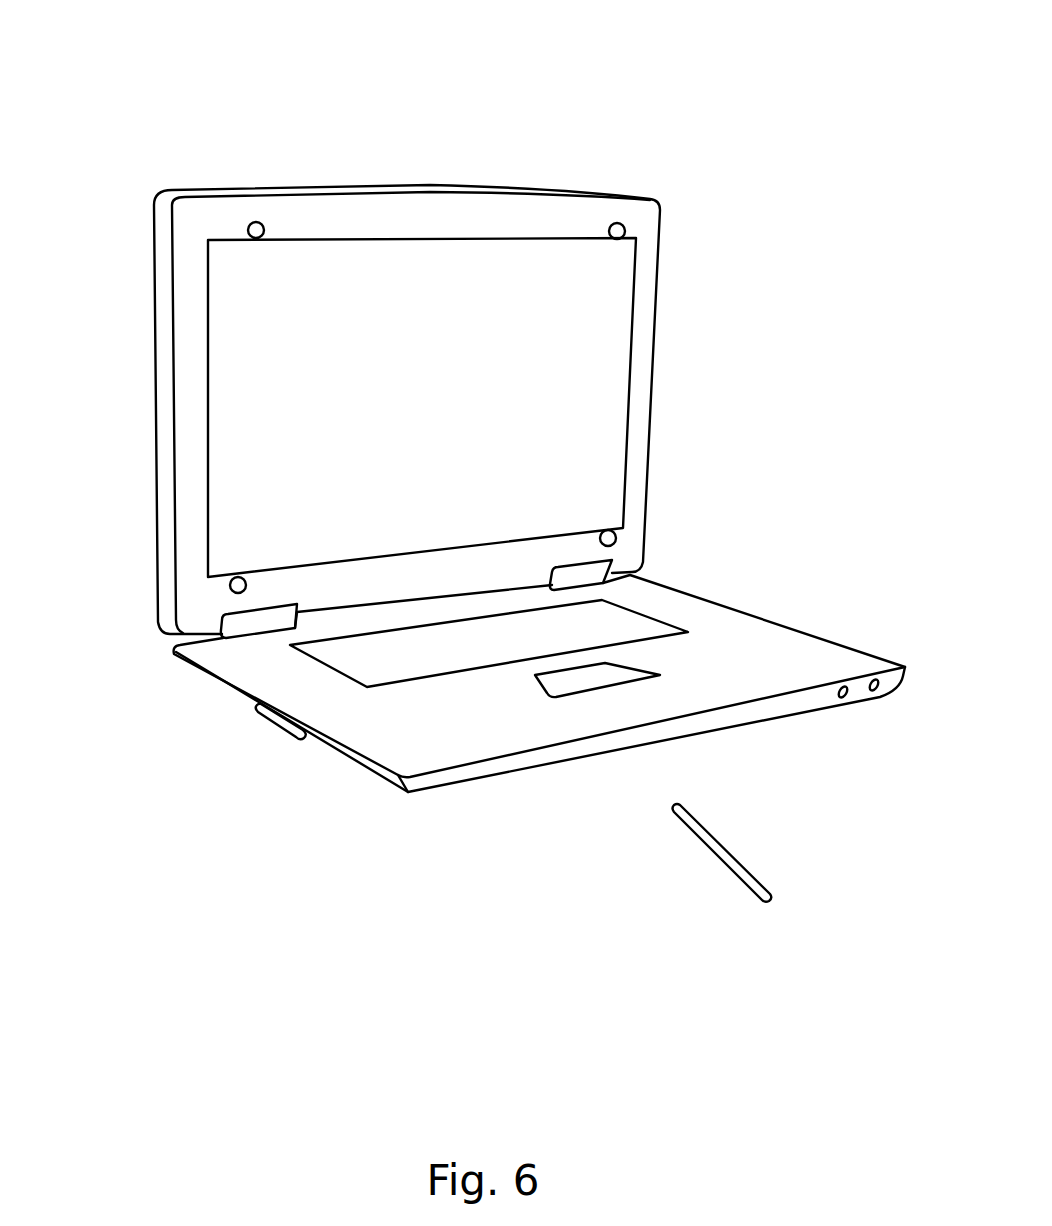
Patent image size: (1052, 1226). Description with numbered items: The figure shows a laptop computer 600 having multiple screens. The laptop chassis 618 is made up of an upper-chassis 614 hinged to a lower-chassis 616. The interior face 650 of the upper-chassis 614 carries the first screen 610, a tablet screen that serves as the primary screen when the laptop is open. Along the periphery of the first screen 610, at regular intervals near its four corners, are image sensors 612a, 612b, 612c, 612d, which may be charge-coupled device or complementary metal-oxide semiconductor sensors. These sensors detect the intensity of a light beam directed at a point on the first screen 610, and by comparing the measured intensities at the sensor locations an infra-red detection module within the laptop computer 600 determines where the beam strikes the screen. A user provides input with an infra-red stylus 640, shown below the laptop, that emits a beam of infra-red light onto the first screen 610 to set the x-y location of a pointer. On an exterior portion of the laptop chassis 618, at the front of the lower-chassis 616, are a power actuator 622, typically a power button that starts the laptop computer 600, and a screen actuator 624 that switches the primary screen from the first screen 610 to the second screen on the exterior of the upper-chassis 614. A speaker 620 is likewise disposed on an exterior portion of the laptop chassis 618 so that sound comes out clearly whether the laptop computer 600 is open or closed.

The laptop computer 600 is at (146, 102).
The first screen 610 is at (422, 407).
The image sensor 612a is at (256, 222).
The image sensor 612b is at (615, 223).
The image sensor 612c is at (238, 577).
The image sensor 612d is at (606, 530).
The upper-chassis 614 is at (660, 203).
The lower-chassis 616 is at (703, 594).
The laptop chassis 618 is at (168, 648).
The speaker 620 is at (277, 727).
The power actuator 622 is at (843, 700).
The screen actuator 624 is at (876, 694).
The infra-red stylus 640 is at (721, 857).
The interior face 650 is at (648, 358).